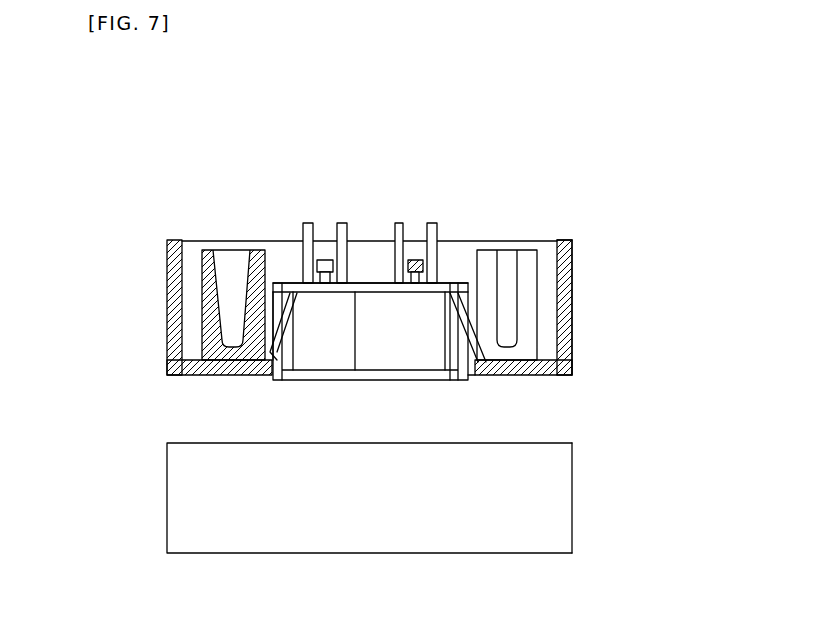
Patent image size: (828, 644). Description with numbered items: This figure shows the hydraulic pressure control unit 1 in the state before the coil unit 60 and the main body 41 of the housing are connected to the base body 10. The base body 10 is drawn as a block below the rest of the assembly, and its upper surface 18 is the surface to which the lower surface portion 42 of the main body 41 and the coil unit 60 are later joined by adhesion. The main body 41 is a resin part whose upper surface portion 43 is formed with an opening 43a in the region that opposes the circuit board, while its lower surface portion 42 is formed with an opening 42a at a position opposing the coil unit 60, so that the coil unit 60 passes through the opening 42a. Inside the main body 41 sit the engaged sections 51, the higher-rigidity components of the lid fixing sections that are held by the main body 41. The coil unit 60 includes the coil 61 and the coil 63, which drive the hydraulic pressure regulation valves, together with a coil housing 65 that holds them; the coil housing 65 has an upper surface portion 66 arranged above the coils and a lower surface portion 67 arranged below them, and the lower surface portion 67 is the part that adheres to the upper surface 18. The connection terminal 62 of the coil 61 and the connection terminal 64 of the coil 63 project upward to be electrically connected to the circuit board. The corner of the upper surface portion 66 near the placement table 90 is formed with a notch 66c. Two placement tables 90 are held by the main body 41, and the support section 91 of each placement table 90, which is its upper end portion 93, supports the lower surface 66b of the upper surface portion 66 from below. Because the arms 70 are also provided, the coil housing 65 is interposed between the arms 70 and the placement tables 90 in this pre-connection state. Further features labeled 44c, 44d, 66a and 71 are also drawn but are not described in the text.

The hydraulic pressure control unit 1 is at (548, 150).
The base body 10 is at (401, 553).
The upper surface 18 is at (558, 443).
The main body 41 is at (573, 283).
The lower surface portion 42 is at (545, 377).
The opening 42a is at (472, 378).
The upper surface portion 43 is at (566, 250).
The opening 43a is at (556, 246).
The left outer wall surface 44c is at (168, 346).
The right outer wall surface 44d is at (573, 340).
The engaged section 51 is at (202, 303).
The coil unit 60 is at (370, 386).
The coil 61 is at (302, 363).
The connection terminal 62 is at (289, 266).
The coil 63 is at (407, 360).
The connection terminal 64 is at (393, 222).
The coil housing 65 is at (285, 243).
The upper surface portion 66 is at (377, 292).
The top wall surface 66a is at (367, 284).
The lower surface 66b is at (445, 293).
The notch 66c is at (454, 288).
The lower surface portion 67 is at (303, 380).
The arms 70 is at (331, 248).
The pin fixing member 71 is at (325, 275).
The placement table 90 is at (500, 318).
The support section 91 is at (440, 248).
The upper end portion 93 is at (432, 253).